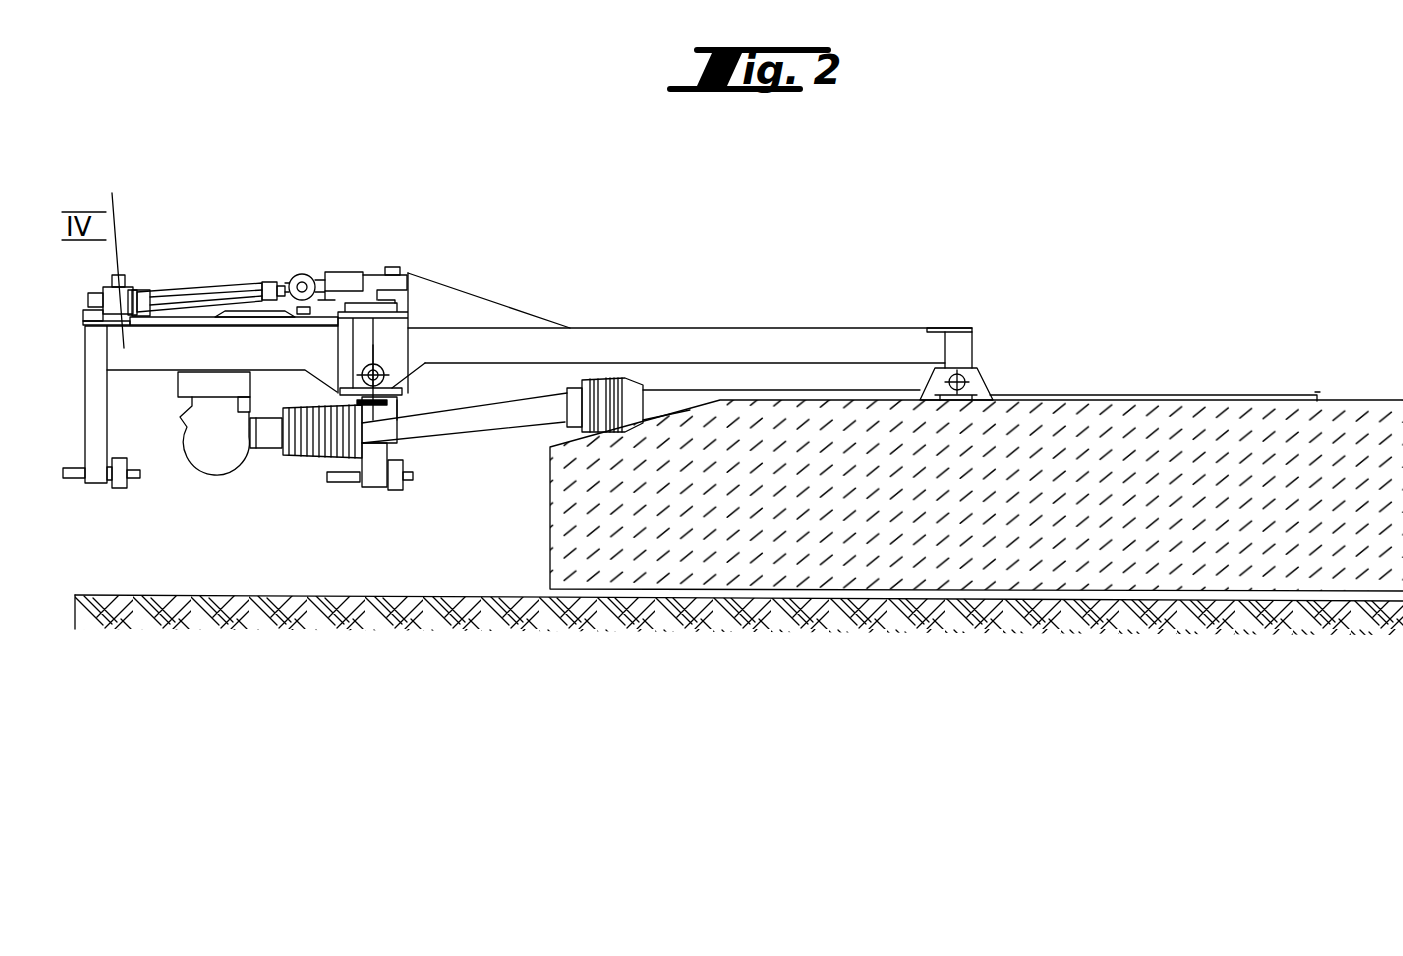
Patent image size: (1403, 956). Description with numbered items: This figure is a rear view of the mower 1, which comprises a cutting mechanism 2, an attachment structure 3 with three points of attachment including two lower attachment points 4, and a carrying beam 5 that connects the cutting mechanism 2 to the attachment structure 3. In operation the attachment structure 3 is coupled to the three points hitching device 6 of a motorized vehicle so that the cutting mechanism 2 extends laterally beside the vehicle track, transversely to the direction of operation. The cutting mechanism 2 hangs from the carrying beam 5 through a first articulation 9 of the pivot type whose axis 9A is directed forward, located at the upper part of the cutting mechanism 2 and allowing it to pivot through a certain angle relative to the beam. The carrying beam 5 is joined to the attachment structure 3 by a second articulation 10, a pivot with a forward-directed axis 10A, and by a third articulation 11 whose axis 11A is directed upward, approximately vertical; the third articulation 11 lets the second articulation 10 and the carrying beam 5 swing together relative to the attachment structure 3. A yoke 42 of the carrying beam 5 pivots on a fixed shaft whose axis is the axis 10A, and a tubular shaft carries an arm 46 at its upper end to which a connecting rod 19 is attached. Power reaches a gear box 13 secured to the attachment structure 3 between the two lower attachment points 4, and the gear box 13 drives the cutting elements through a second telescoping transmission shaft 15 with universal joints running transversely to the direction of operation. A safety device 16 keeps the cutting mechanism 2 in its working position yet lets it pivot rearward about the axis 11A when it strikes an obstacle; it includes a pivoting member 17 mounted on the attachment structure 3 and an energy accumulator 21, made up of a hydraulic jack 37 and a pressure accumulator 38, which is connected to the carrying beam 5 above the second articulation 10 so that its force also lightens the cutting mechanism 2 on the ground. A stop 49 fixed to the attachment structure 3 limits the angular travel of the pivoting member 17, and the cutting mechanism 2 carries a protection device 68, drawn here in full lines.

The mower 1 is at (915, 217).
The cutting mechanism 2 is at (1208, 400).
The attachment structure 3 is at (82, 425).
The lower attachment points 4 is at (128, 478).
The carrying beam 5 is at (703, 332).
The three points hitching device 6 is at (118, 488).
The first articulation 9 is at (968, 372).
The axis of the first articulation 9A is at (977, 390).
The second articulation 10 is at (400, 368).
The axis of the second articulation 10A is at (392, 380).
The third articulation 11 is at (360, 342).
The axis of the third articulation 11A is at (378, 412).
The gear box 13 is at (215, 468).
The second telescoping transmission shaft 15 is at (522, 420).
The safety device 16 is at (189, 280).
The pivoting member 17 is at (103, 290).
The connecting rod 19 is at (242, 300).
The energy accumulator 21 is at (163, 298).
The hydraulic jack 37 is at (336, 283).
The pressure accumulator 38 is at (294, 272).
The yoke 42 is at (400, 343).
The arm 46 is at (398, 270).
The stop 49 is at (100, 318).
The protection device 68 is at (552, 548).